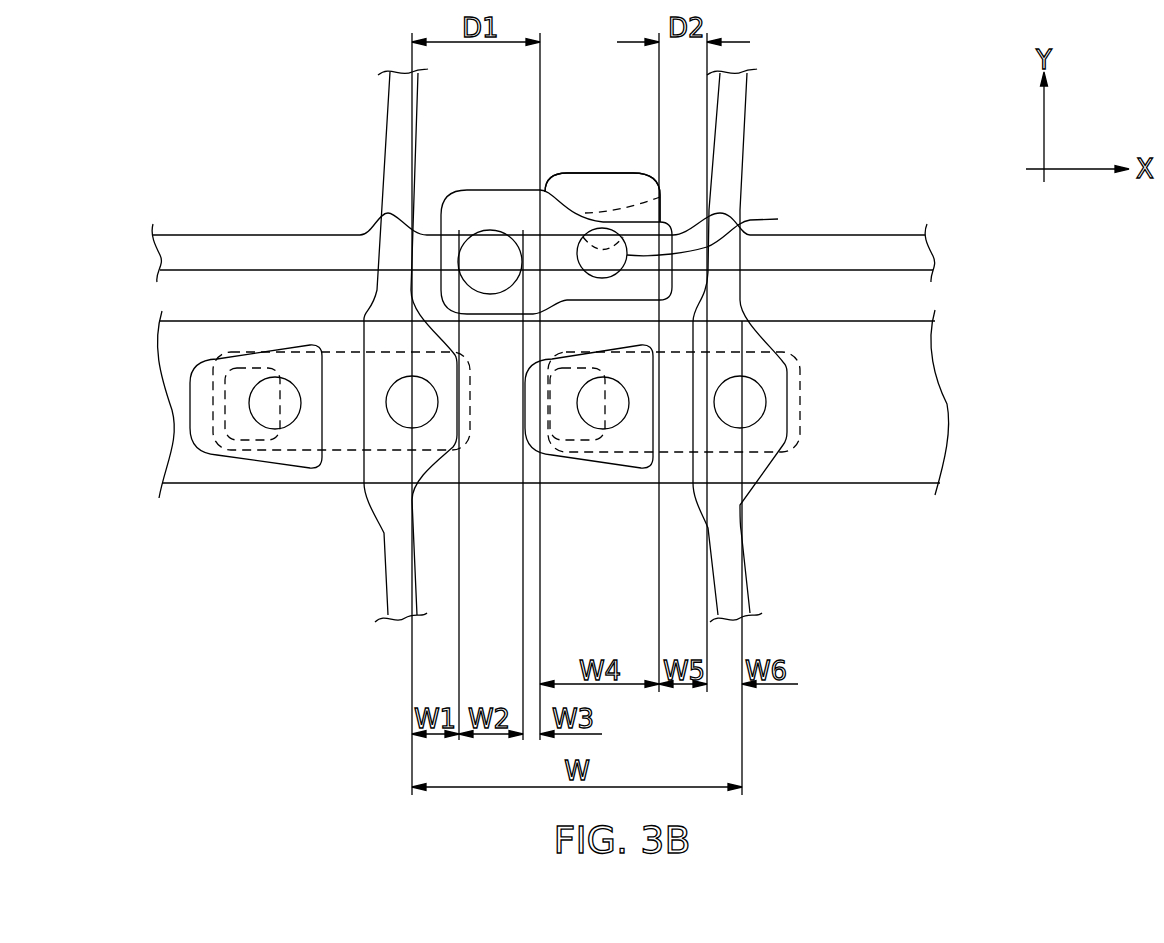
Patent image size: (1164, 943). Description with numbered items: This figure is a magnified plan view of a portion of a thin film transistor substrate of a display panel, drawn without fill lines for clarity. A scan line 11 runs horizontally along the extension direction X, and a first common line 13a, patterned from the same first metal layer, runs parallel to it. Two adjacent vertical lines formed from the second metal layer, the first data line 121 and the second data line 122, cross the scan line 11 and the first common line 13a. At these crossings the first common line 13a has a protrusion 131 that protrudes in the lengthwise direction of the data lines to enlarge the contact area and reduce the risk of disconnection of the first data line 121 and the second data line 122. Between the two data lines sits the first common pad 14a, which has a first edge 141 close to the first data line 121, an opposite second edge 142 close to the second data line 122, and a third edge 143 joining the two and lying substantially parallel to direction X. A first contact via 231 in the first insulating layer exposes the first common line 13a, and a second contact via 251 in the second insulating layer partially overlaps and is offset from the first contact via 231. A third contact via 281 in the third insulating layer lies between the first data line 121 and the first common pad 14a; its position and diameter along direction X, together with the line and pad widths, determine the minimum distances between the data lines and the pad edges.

The scan line 11 is at (913, 410).
The first common line 13a is at (913, 251).
The first common pad 14a is at (602, 173).
The first data line 121 is at (398, 107).
The second data line 122 is at (737, 107).
The protrusion 131 is at (720, 214).
The first edge 141 is at (540, 217).
The second edge 142 is at (672, 267).
The third edge 143 is at (573, 173).
The first contact via 231 is at (729, 229).
The second contact via 251 is at (667, 192).
The third contact via 281 is at (468, 239).